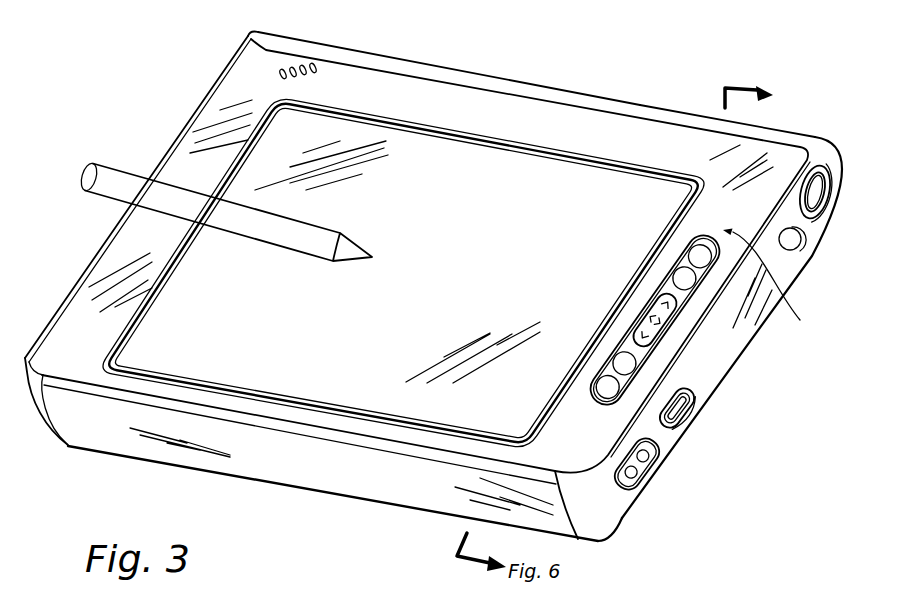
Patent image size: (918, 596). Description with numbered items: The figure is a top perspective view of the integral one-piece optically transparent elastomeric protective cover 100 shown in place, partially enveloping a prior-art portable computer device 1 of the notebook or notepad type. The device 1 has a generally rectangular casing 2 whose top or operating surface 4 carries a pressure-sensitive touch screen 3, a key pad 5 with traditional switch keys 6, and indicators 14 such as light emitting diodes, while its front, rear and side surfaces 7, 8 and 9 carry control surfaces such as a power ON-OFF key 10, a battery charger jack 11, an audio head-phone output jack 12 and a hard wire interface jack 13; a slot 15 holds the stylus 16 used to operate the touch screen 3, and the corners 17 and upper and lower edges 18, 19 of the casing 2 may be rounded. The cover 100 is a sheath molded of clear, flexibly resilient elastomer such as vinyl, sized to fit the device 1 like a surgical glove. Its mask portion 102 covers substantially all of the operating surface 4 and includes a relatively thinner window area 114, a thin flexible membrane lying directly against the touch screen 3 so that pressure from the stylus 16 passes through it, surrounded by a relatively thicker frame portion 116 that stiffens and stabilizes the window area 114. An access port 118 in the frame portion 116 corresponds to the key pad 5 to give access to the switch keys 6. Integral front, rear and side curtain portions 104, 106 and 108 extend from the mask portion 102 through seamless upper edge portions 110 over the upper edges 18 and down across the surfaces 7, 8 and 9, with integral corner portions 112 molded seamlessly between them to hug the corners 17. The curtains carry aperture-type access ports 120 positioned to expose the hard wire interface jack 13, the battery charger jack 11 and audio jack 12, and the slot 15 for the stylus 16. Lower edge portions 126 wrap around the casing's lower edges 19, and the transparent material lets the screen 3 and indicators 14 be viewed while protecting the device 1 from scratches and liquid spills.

The portable computer device 1 is at (166, 70).
The casing 2 is at (233, 58).
The touch screen 3 is at (263, 153).
The operating surface 4 is at (82, 333).
The key pad 5 is at (768, 278).
The switch keys 6 is at (687, 284).
The front surface 7 is at (140, 443).
The rear surface 8 is at (640, 100).
The side surface 9 is at (698, 396).
The power ON-OFF key 10 is at (778, 258).
The battery charger jack 11 is at (645, 486).
The audio head-phone output jack 12 is at (657, 483).
The hard wire interface jack 13 is at (688, 430).
The indicators 14 is at (320, 55).
The slot 15 is at (807, 207).
The stylus 16 is at (113, 190).
The corners 17 is at (596, 520).
The upper edges 18 is at (323, 433).
The lower edges 19 is at (80, 450).
The protective cover 100 is at (767, 66).
The mask portion 102 is at (185, 170).
The front curtain portion 104 is at (473, 505).
The rear curtain portion 106 is at (840, 178).
The side curtain portion 108 is at (762, 300).
The upper edge portions 110 is at (416, 63).
The corner portions 112 is at (592, 525).
The window area 114 is at (493, 170).
The frame portion 116 is at (433, 100).
The access port 118 is at (712, 388).
The access ports 120 is at (833, 197).
The lower edge portions 126 is at (796, 246).